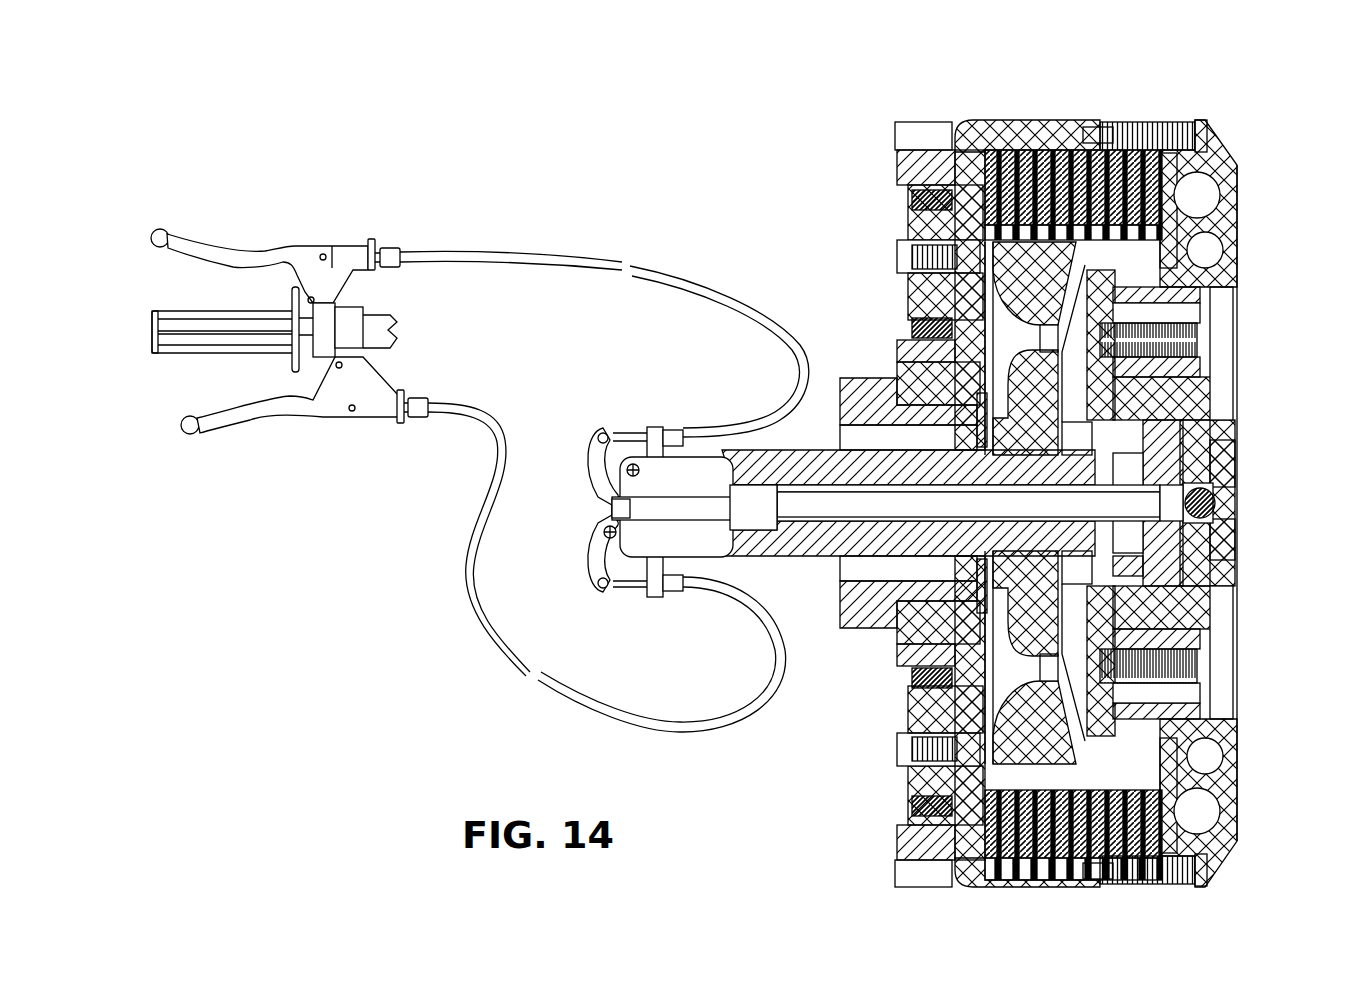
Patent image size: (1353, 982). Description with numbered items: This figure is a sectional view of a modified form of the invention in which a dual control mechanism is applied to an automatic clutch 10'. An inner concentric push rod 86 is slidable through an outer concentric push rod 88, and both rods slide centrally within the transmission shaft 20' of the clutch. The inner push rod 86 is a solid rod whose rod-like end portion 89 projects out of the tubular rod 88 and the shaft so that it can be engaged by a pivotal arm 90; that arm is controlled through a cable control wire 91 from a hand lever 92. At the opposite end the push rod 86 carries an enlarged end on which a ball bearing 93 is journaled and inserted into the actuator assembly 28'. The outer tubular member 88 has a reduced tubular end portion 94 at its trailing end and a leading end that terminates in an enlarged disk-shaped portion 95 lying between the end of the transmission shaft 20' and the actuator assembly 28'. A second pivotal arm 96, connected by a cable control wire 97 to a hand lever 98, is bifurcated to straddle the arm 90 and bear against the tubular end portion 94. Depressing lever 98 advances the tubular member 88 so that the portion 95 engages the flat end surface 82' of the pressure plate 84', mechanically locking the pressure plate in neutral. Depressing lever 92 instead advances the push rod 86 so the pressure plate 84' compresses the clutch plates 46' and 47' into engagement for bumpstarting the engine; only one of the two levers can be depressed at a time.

The automatic clutch 10' is at (748, 460).
The transmission shaft 20' is at (886, 456).
The actuator assembly 28' is at (1264, 500).
The clutch plates 46' is at (902, 261).
The clutch plates 47' is at (1051, 136).
The flat end surface 82' is at (1229, 432).
The pressure plate 84' is at (1216, 345).
The inner concentric push rod 86 is at (815, 528).
The outer concentric push rod 88 is at (757, 530).
The rod-like end portion 89 is at (690, 480).
The pivotal arm 90 is at (583, 487).
The cable control wire 91 is at (627, 433).
The hand lever 92 is at (1170, 510).
The ball bearing 93 is at (1217, 510).
The reduced tubular end portion 94 is at (664, 520).
The disk-shaped portion 95 is at (1140, 573).
The pivotal arm 96 is at (590, 563).
The cable control wire 97 is at (630, 583).
The hand lever 98 is at (235, 418).